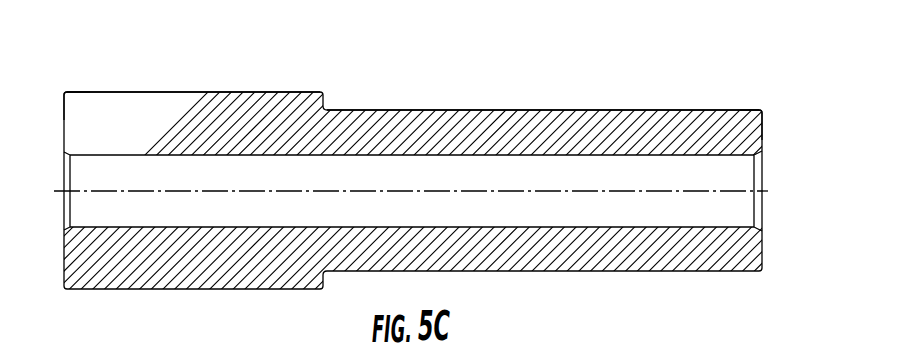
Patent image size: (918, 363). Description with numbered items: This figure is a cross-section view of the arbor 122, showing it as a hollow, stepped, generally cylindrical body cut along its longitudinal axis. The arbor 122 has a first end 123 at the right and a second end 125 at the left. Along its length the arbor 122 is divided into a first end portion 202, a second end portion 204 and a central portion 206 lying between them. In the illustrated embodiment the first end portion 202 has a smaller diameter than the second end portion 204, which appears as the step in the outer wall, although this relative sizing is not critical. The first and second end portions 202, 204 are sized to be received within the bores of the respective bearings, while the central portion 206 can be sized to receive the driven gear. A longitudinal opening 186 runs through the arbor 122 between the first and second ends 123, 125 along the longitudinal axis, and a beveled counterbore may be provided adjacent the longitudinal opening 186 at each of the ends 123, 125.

The arbor 122 is at (631, 51).
The first end 123 is at (765, 107).
The second end 125 is at (67, 89).
The longitudinal opening 186 is at (742, 171).
The first end portion 202 is at (667, 110).
The second end portion 204 is at (223, 92).
The central portion 206 is at (416, 111).